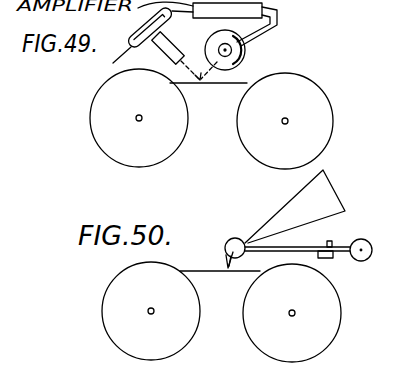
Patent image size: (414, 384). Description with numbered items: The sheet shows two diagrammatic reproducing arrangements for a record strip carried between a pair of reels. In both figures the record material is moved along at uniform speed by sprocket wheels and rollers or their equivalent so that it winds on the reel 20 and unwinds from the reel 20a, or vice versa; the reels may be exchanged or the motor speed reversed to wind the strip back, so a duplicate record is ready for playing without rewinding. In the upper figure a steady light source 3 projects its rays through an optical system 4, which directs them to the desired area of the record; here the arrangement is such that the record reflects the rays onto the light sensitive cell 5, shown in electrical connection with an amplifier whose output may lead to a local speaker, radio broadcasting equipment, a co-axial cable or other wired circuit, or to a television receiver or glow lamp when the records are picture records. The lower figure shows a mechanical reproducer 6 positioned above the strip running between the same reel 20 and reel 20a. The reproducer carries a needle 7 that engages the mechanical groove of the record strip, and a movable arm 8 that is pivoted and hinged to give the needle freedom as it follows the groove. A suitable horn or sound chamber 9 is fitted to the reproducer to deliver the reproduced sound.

In FIG. 49, the light source 3 is at (142, 30).
In FIG. 49, the optical system 4 is at (147, 53).
In FIG. 49, the light sensitive cell 5 is at (206, 33).
In FIG. 50, the mechanical reproducer 6 is at (225, 245).
In FIG. 50, the needle 7 is at (227, 268).
In FIG. 50, the movable arm 8 is at (300, 248).
In FIG. 50, the horn or sound chamber 9 is at (318, 207).
In FIG. 49, the reel 20 is at (105, 140).
In FIG. 50, the reel 20 is at (133, 342).
In FIG. 49, the reel 20a is at (280, 148).
In FIG. 50, the reel 20a is at (280, 346).